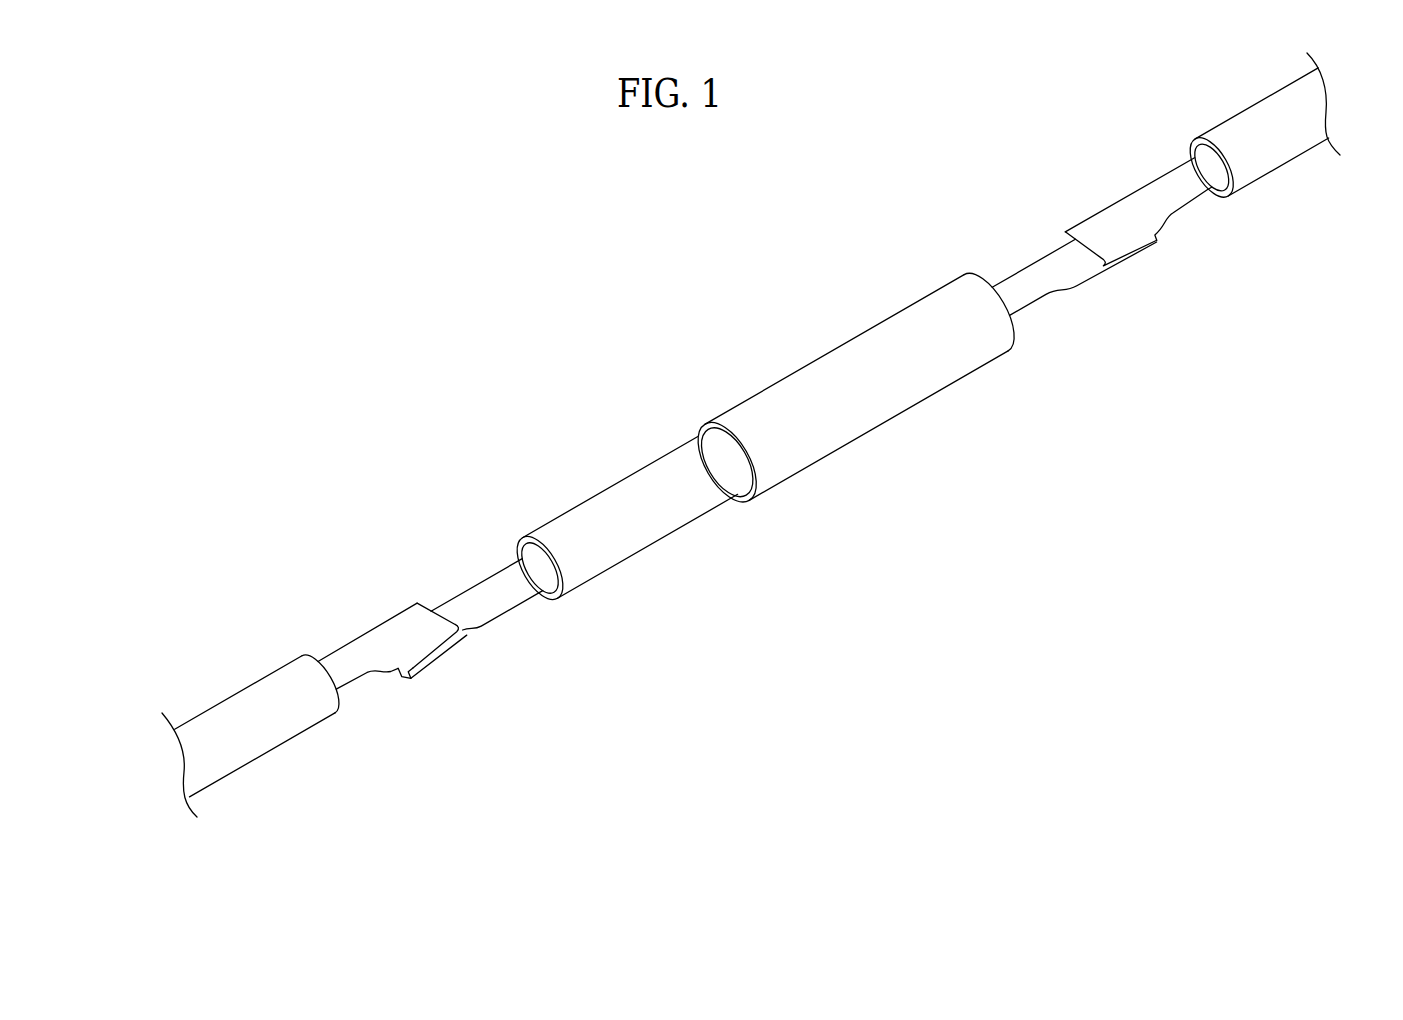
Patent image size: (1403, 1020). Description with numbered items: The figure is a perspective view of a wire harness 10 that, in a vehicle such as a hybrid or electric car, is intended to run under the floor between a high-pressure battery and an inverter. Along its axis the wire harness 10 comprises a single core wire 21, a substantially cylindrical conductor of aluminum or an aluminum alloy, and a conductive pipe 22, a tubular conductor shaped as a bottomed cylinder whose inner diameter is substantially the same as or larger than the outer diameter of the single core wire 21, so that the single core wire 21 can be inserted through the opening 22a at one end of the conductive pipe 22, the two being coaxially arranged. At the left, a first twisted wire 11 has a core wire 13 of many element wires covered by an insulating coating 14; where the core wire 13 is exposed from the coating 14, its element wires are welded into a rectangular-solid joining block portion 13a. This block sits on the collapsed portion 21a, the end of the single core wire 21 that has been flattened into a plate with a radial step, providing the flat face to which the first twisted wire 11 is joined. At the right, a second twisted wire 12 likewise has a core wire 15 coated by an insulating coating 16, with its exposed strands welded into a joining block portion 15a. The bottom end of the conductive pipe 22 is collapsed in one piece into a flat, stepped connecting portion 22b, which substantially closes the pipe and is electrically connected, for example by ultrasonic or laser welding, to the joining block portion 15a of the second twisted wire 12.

The wire harness 10 is at (442, 321).
The first twisted wire 11 is at (251, 680).
The second twisted wire 12 is at (1240, 108).
The core wire 13 is at (347, 645).
The joining block portion 13a is at (407, 625).
The insulating coating 14 is at (267, 728).
The core wire 15 is at (1167, 173).
The joining block portion 15a is at (1097, 228).
The insulating coating 16 is at (1280, 152).
The single core wire 21 is at (638, 533).
The collapsed portion 21a is at (472, 631).
The conductive pipe 22 is at (982, 369).
The opening 22a is at (722, 458).
The connecting portion 22b is at (1100, 270).